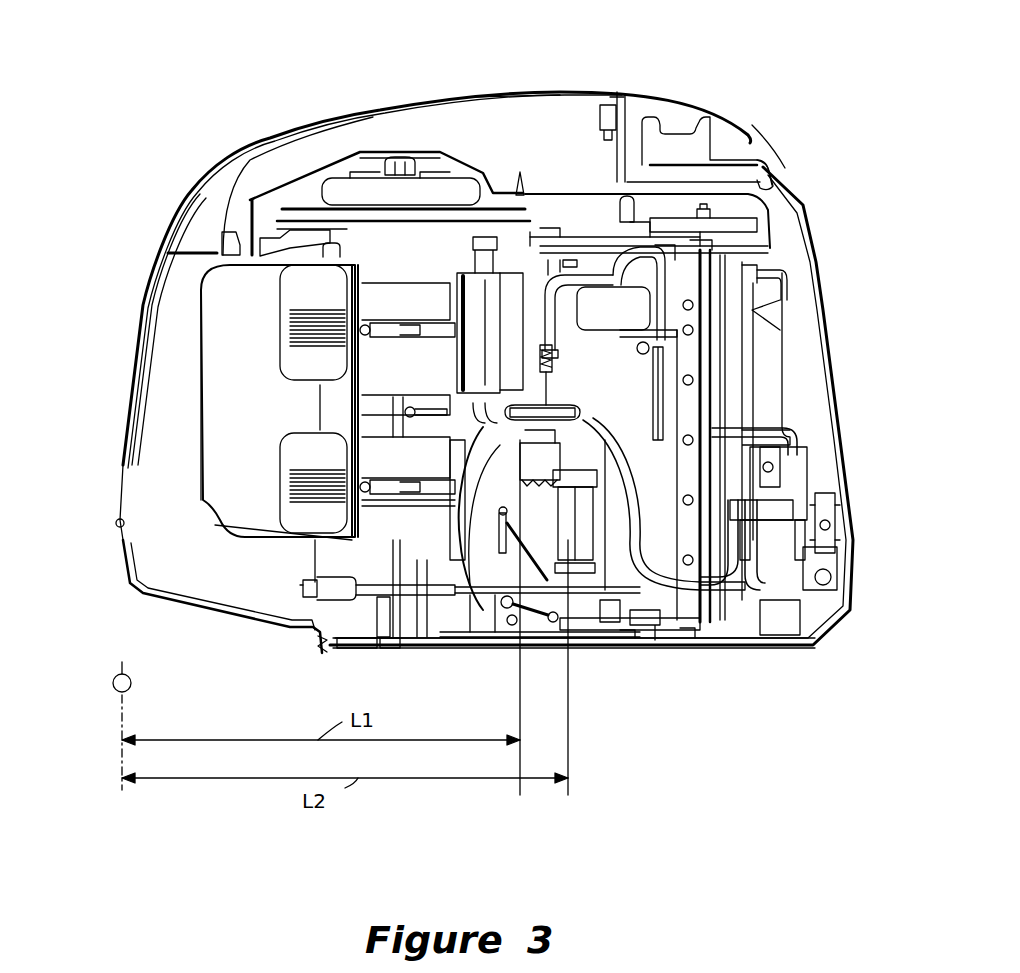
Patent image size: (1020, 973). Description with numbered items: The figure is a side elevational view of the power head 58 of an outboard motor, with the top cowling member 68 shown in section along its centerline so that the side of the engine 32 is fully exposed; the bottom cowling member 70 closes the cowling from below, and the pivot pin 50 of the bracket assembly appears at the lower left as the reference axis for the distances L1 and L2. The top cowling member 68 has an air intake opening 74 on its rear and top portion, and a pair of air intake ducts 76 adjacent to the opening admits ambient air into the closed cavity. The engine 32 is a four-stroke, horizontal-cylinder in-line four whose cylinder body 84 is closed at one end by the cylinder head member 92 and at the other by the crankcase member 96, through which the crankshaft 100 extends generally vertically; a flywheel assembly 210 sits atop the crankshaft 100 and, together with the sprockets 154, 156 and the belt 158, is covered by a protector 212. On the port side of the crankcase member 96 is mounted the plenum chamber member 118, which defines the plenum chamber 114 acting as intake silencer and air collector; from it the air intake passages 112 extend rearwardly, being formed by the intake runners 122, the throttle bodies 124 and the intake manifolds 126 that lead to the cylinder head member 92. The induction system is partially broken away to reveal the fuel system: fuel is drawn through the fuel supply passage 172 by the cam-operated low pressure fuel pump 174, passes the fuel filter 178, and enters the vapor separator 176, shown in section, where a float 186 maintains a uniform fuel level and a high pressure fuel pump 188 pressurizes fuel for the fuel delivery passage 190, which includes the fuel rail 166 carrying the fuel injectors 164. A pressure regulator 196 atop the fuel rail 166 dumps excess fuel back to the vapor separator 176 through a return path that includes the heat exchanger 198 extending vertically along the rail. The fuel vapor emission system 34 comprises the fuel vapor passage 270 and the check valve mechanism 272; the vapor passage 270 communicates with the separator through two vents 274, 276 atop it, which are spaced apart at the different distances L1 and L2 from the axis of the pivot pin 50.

The engine 32 is at (552, 118).
The fuel vapor emission system 34 is at (700, 403).
The pivot pin 50 is at (137, 675).
The power head 58 is at (817, 207).
The top cowling member 68 is at (143, 335).
The bottom cowling member 70 is at (118, 565).
The air intake opening 74 is at (748, 130).
The air intake ducts 76 is at (716, 150).
The cylinder body 84 is at (430, 652).
The cylinder head member 92 is at (673, 617).
The crankcase member 96 is at (327, 558).
The crankshaft 100 is at (400, 160).
The air intake passages 112 is at (380, 345).
The plenum chamber 114 is at (210, 458).
The plenum chamber member 118 is at (213, 397).
The intake runners 122 is at (300, 298).
The throttle bodies 124 is at (473, 293).
The intake manifolds 126 is at (590, 287).
The sprocket 154 is at (728, 223).
The sprocket 156 is at (370, 222).
The belt 158 is at (557, 242).
The fuel injectors 164 is at (770, 360).
The fuel rail 166 is at (768, 300).
The fuel supply passage 172 is at (775, 432).
The low pressure fuel pump 174 is at (796, 490).
The vapor separator 176 is at (536, 560).
The fuel filter 178 is at (837, 530).
The float 186 is at (490, 575).
The high pressure fuel pump 188 is at (585, 575).
The fuel delivery passage 190 is at (657, 623).
The pressure regulator 196 is at (760, 256).
The heat exchanger 198 is at (625, 395).
The flywheel assembly 210 is at (337, 187).
The protector 212 is at (383, 153).
The fuel vapor passage 270 is at (550, 323).
The check valve mechanism 272 is at (540, 380).
The vent 274 is at (410, 490).
The vent 276 is at (602, 628).